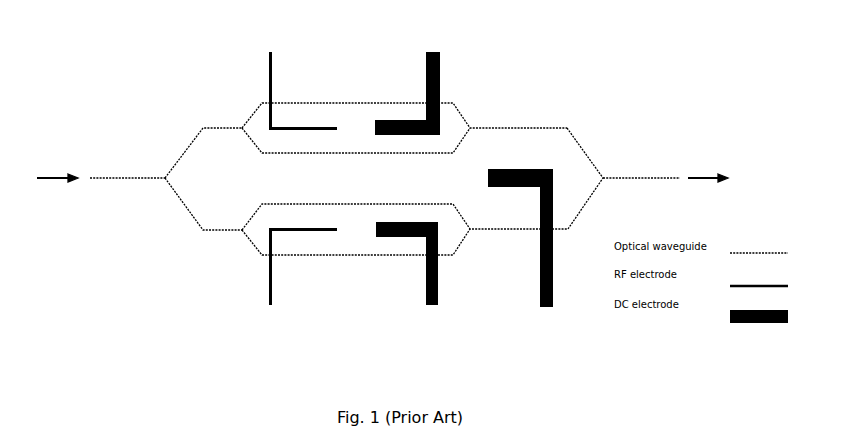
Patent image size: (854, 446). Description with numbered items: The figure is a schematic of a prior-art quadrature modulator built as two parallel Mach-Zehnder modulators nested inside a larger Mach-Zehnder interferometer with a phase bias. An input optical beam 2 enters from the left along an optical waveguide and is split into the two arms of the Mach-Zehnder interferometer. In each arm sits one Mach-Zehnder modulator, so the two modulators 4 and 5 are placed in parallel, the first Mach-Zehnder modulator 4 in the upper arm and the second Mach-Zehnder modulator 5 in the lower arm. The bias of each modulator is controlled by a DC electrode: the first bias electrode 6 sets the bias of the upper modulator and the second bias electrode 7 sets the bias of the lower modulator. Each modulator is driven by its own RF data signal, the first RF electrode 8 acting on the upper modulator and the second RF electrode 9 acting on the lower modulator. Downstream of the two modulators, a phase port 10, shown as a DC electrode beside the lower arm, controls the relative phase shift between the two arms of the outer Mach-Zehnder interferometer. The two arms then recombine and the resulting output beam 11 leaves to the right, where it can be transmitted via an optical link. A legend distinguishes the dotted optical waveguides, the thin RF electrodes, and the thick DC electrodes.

The input optical beam 2 is at (101, 153).
The Mach-Zehnder modulator 4 is at (404, 112).
The Mach-Zehnder modulator 5 is at (405, 244).
The Bias 1 6 is at (407, 81).
The Bias 2 7 is at (407, 276).
The RF1 data signal 8 is at (300, 75).
The RF2 data signal 9 is at (301, 278).
The Phase port 10 is at (525, 251).
The output beam 11 is at (708, 154).